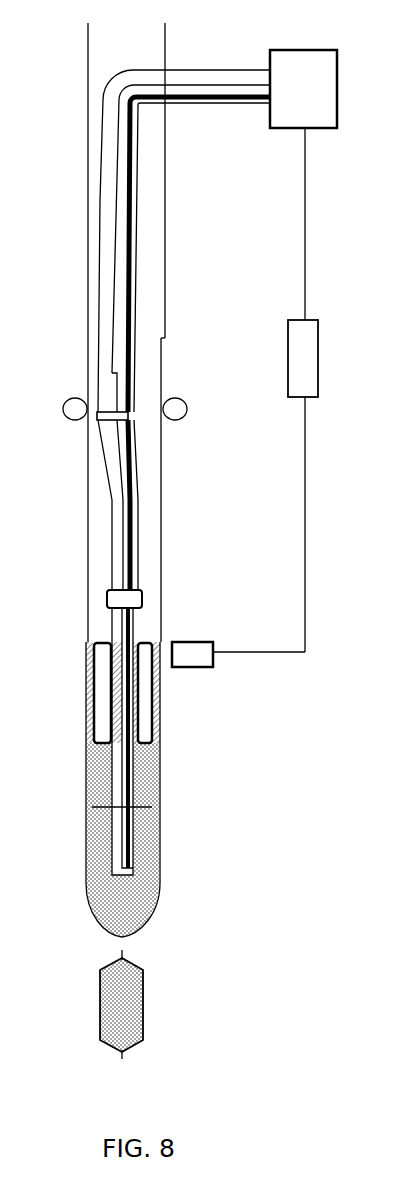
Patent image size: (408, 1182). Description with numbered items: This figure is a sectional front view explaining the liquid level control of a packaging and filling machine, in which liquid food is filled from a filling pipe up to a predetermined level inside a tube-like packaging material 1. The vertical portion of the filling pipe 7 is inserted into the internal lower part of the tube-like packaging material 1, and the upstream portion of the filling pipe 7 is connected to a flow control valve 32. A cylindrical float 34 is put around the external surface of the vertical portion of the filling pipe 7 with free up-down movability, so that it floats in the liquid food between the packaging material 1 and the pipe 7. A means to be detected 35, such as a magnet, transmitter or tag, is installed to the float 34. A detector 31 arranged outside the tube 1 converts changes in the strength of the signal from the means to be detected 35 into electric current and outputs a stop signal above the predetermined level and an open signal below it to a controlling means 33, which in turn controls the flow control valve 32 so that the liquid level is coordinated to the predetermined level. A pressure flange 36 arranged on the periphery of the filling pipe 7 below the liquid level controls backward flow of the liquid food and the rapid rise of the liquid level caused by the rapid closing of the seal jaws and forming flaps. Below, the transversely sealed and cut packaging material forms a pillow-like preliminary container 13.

The tube-like packaging material 1 is at (87, 253).
The filling pipe 7 is at (218, 70).
The pillow-like preliminary container 13 is at (152, 1004).
The detector 31 is at (193, 655).
The flow control valve 32 is at (290, 103).
The controlling means 33 is at (288, 357).
The cylindrical float 34 is at (152, 710).
The means to be detected 35 is at (143, 640).
The pressure flange 36 is at (155, 803).